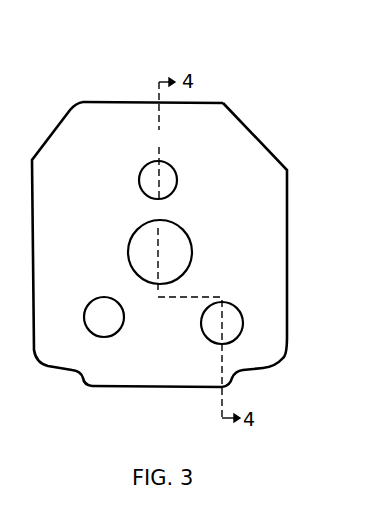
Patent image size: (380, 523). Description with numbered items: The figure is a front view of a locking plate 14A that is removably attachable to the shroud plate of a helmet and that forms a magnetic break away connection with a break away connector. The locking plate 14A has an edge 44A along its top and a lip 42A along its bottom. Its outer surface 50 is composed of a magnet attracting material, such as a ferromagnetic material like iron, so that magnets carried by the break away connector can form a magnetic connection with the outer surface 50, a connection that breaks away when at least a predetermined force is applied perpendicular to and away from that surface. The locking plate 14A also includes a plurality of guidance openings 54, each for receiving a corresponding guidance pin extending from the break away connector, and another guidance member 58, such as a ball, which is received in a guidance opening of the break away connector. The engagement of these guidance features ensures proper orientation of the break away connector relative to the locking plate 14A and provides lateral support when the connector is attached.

The locking plate 14A is at (258, 141).
The edge 44A is at (112, 100).
The lip 42A is at (153, 389).
The guidance openings 54 is at (172, 166).
The guidance member 58 is at (180, 230).
The outer surface 50 is at (254, 240).